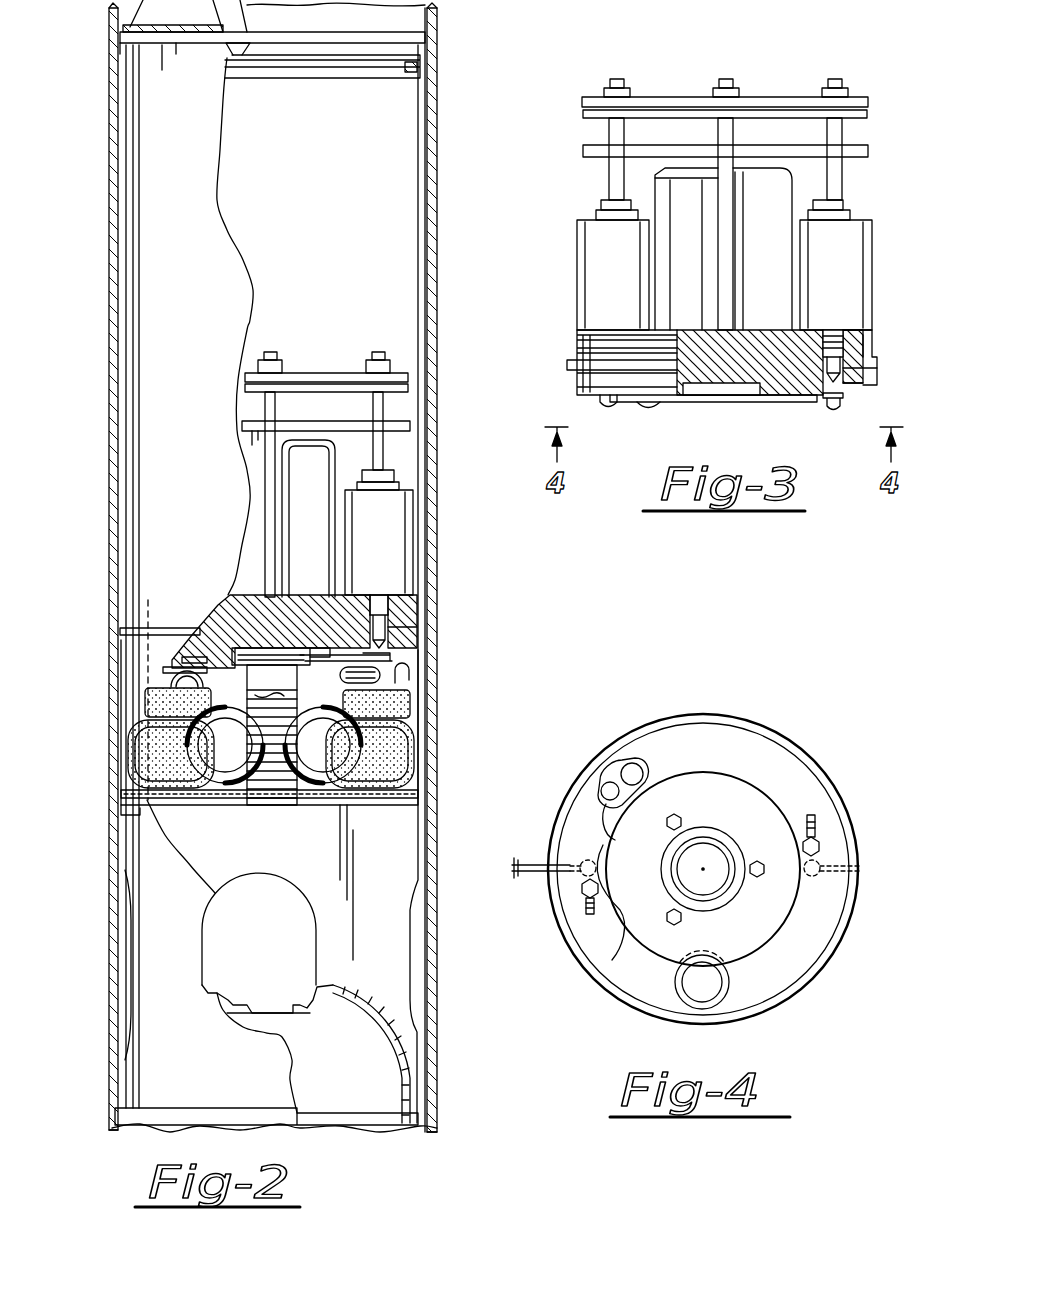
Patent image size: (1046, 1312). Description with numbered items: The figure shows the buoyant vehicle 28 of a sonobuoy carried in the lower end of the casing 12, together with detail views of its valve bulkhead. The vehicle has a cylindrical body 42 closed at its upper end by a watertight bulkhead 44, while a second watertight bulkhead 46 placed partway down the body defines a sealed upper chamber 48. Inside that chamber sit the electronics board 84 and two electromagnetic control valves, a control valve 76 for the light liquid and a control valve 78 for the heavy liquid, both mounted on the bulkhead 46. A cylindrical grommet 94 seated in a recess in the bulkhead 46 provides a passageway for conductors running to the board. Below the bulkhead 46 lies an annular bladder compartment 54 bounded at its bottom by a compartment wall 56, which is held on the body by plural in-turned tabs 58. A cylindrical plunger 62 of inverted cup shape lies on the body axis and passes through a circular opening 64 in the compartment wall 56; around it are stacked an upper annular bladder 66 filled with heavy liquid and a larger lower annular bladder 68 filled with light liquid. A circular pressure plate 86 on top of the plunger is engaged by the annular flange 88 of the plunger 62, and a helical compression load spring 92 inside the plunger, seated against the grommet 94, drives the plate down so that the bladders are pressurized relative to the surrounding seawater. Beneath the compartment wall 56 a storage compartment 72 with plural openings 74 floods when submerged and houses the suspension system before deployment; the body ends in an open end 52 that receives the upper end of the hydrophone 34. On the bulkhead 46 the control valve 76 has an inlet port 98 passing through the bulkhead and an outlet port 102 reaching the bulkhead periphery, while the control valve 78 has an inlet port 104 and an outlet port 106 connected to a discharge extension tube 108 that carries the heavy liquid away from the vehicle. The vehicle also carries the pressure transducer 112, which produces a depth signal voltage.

In FIG. 2, the casing 12 is at (445, 68).
In FIG. 2, the buoyant vehicle 28 is at (430, 133).
In FIG. 2, the watertight bulkhead 44 is at (345, 80).
In FIG. 2, the cylindrical body 42 is at (420, 160).
In FIG. 2, the sealed upper chamber 48 is at (338, 246).
In FIG. 2, the electronics board 84 is at (322, 392).
In FIG. 3, the electronics board 84 is at (860, 147).
In FIG. 2, the cylindrical grommet 94 is at (313, 597).
In FIG. 3, the cylindrical grommet 94 is at (730, 395).
In FIG. 2, the control valve 76 is at (395, 549).
In FIG. 3, the control valve 76 is at (811, 279).
In FIG. 3, the control valve 78 is at (583, 279).
In FIG. 2, the bulkhead 46 is at (245, 582).
In FIG. 3, the bulkhead 46 is at (758, 331).
In FIG. 2, the annular flange 88 is at (232, 605).
In FIG. 2, the cylindrical plunger 62 is at (177, 682).
In FIG. 2, the bladder compartment 54 is at (412, 732).
In FIG. 4, the bladder compartment 54 is at (703, 869).
In FIG. 2, the pressure plate 86 is at (405, 700).
In FIG. 2, the annular bladder 66 is at (168, 706).
In FIG. 2, the annular bladder 68 is at (155, 752).
In FIG. 2, the circular opening 64 is at (340, 775).
In FIG. 2, the storage compartment 72 is at (255, 853).
In FIG. 4, the storage compartment 72 is at (712, 869).
In FIG. 2, the helical compression load spring 92 is at (280, 800).
In FIG. 2, the in-turned tabs 58 is at (410, 803).
In FIG. 2, the compartment wall 56 is at (135, 814).
In FIG. 2, the openings 74 is at (205, 940).
In FIG. 2, the hydrophone 34 is at (418, 1042).
In FIG. 2, the open end 52 is at (430, 1106).
In FIG. 3, the inlet port 98 is at (825, 398).
In FIG. 4, the inlet port 98 is at (820, 825).
In FIG. 3, the outlet port 102 is at (875, 388).
In FIG. 4, the outlet port 102 is at (832, 878).
In FIG. 4, the discharge extension tube 108 is at (530, 860).
In FIG. 4, the outlet port 106 is at (580, 892).
In FIG. 4, the inlet port 104 is at (580, 920).
In FIG. 4, the pressure transducer 112 is at (712, 992).